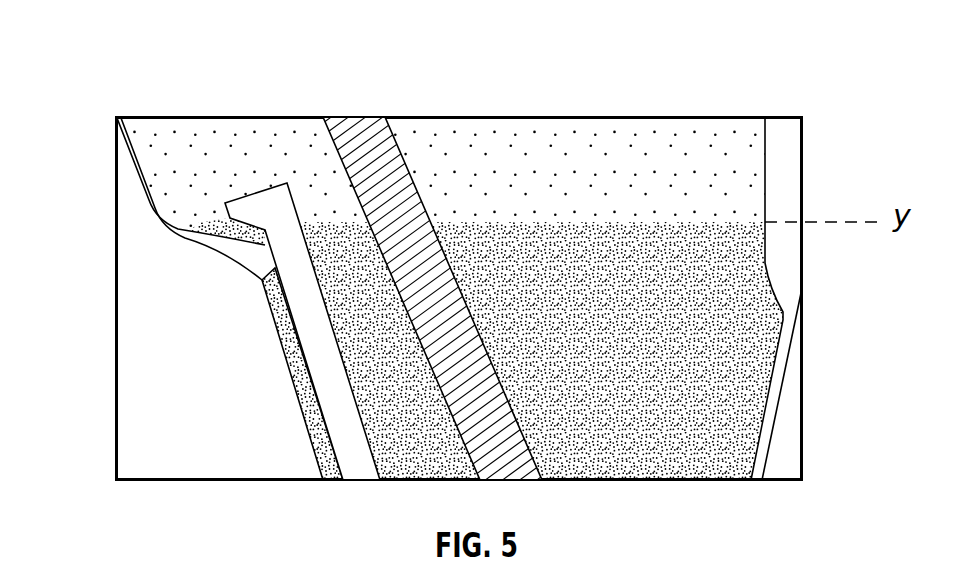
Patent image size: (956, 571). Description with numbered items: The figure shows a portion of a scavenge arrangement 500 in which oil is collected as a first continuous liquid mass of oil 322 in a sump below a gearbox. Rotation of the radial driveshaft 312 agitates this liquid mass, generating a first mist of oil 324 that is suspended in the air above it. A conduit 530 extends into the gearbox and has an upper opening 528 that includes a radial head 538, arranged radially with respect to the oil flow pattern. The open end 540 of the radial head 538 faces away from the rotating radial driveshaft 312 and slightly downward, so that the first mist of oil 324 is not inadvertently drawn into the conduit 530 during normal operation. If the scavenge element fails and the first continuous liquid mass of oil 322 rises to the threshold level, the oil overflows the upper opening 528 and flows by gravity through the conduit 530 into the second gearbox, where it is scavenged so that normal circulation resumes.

The scavenge arrangement 500 is at (106, 42).
The upper opening 528 is at (224, 181).
The radial head 538 is at (268, 182).
The open end 540 is at (221, 219).
The conduit 530 is at (300, 358).
The radial driveshaft 312 is at (410, 173).
The first mist of oil 324 is at (616, 135).
The first continuous liquid mass of oil 322 is at (692, 453).